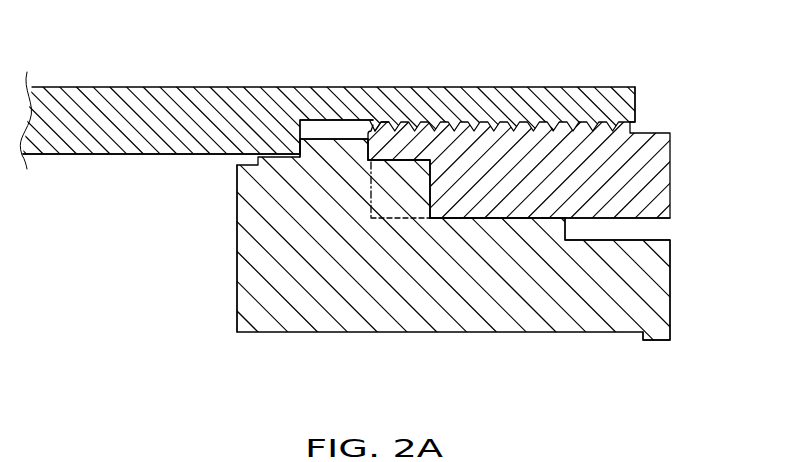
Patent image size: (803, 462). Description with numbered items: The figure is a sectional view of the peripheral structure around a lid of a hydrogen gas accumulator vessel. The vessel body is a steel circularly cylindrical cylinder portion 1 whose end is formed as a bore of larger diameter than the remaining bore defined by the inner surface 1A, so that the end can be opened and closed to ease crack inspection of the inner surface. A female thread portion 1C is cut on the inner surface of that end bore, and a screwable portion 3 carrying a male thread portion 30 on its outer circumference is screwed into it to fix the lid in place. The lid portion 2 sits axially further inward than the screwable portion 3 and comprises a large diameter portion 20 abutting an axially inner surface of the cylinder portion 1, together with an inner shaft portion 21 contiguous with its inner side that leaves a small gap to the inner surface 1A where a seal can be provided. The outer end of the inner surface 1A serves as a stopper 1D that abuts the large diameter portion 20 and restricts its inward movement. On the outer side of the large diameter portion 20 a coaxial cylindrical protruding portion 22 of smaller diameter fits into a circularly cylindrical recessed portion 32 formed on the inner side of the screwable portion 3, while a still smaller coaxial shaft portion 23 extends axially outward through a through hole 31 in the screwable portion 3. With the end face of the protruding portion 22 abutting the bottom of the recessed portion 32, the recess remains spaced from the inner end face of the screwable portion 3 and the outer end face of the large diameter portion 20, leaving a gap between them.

The circularly cylindrical cylinder portion 1 is at (68, 86).
The inner surface 1A is at (68, 157).
The female thread portion 1C is at (602, 136).
The stopper 1D is at (285, 137).
The lid portion 2 is at (222, 247).
The large diameter portion 20 is at (348, 135).
The inner shaft portion 21 is at (262, 310).
The protruding portion 22 is at (387, 202).
The shaft portion 23 is at (585, 310).
The screwable portion 3 is at (672, 175).
The male thread portion 30 is at (607, 120).
The through hole 31 is at (402, 118).
The recessed portion 32 is at (445, 220).